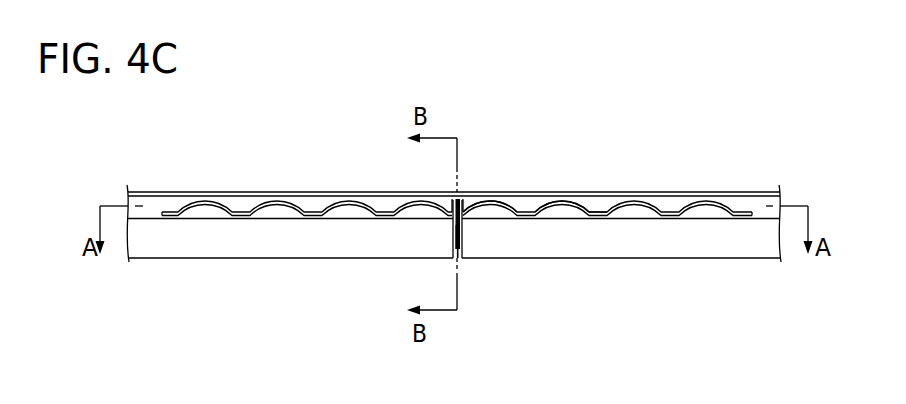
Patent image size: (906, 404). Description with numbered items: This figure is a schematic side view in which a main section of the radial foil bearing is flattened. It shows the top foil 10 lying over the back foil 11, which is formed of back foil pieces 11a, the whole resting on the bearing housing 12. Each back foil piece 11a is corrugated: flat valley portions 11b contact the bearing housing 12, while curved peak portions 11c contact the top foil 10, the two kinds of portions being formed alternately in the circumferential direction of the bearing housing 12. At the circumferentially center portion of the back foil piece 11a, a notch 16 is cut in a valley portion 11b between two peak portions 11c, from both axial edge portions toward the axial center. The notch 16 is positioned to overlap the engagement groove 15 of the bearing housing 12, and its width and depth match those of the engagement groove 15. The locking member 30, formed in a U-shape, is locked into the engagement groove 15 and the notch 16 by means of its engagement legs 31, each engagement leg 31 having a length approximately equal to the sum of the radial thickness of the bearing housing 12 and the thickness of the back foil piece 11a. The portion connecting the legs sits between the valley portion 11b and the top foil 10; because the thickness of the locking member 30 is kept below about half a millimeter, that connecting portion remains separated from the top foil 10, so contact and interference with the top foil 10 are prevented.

The top foil 10 is at (384, 192).
The back foil 11 is at (457, 237).
The back foil piece 11a is at (505, 224).
The valley portion 11b is at (601, 212).
The peak portion 11c is at (563, 201).
The bearing housing 12 is at (565, 243).
The engagement groove 15 is at (452, 258).
The notch 16 is at (453, 210).
The locking member 30 is at (462, 198).
The engagement leg 31 is at (458, 233).